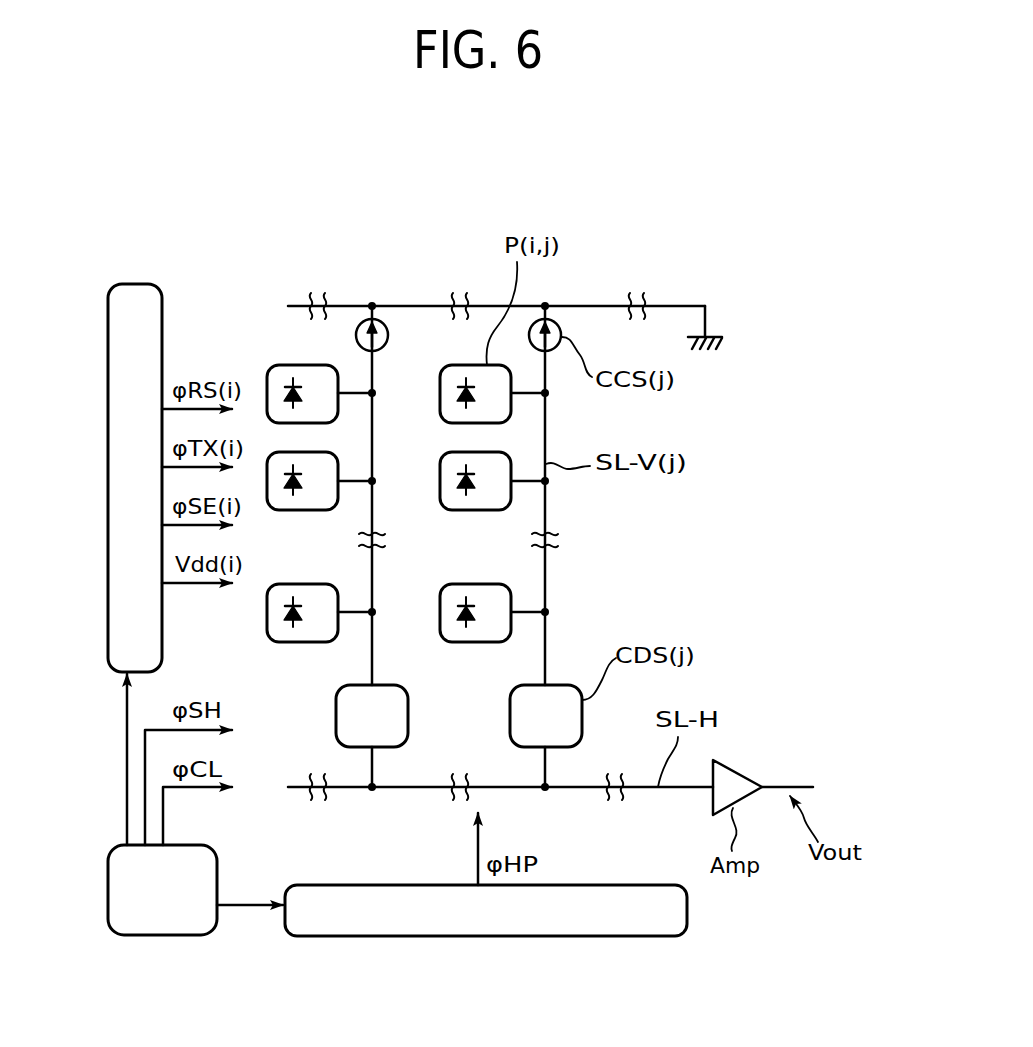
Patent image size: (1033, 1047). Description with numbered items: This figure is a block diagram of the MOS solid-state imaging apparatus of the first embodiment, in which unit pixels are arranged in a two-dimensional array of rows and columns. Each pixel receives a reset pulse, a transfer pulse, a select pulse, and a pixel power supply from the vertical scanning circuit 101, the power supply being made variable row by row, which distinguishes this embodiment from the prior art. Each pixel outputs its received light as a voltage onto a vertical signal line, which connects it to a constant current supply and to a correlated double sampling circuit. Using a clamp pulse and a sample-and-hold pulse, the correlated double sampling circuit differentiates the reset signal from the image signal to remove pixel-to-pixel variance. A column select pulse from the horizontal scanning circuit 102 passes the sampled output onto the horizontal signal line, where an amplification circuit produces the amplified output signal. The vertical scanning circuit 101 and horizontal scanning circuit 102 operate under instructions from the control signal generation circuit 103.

The vertical scanning circuit 101 is at (135, 284).
The horizontal scanning circuit 102 is at (687, 915).
The control signal generation circuit 103 is at (137, 937).